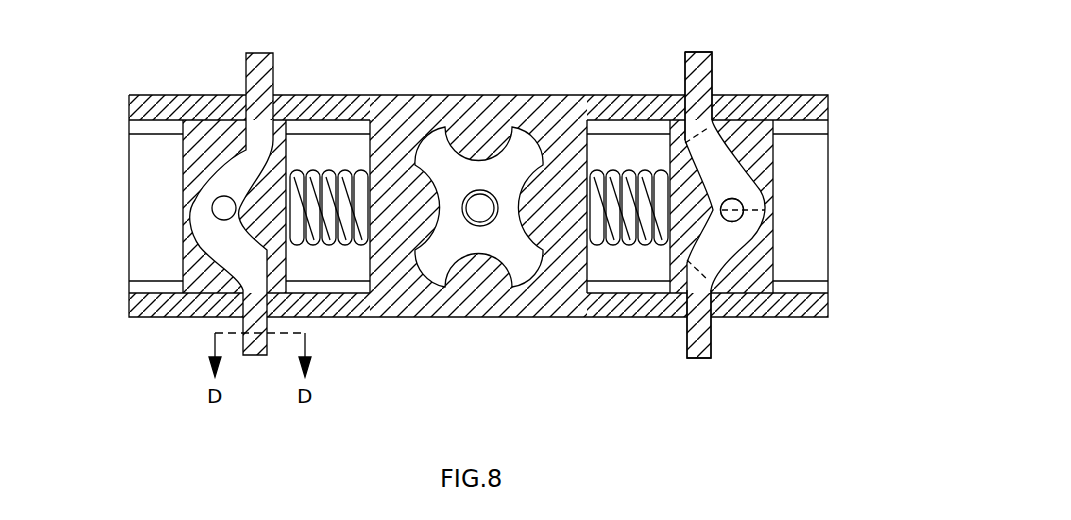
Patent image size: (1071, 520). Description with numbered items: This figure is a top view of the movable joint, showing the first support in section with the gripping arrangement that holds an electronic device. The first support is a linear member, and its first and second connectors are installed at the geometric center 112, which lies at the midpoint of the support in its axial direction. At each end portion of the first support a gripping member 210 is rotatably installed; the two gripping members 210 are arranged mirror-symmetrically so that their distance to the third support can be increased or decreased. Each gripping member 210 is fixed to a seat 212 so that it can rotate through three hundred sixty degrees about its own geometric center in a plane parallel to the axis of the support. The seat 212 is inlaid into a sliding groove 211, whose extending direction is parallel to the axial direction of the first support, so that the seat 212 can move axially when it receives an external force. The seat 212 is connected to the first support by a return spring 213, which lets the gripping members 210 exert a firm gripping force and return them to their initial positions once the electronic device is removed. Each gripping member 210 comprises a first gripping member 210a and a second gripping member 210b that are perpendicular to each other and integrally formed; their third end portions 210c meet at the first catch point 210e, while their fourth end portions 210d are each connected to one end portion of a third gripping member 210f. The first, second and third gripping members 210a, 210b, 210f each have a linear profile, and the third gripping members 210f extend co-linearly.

The gripping member 210 is at (750, 209).
The first gripping member 210a is at (731, 193).
The second gripping member 210b is at (712, 250).
The third end portion 210c is at (715, 210).
The fourth end portion 210d is at (708, 128).
The first catch point 210e is at (221, 205).
The third gripping member 210f is at (698, 56).
The sliding groove 211 is at (305, 132).
The seat 212 is at (237, 205).
The return spring 213 is at (337, 207).
The geometric center 112 is at (486, 226).